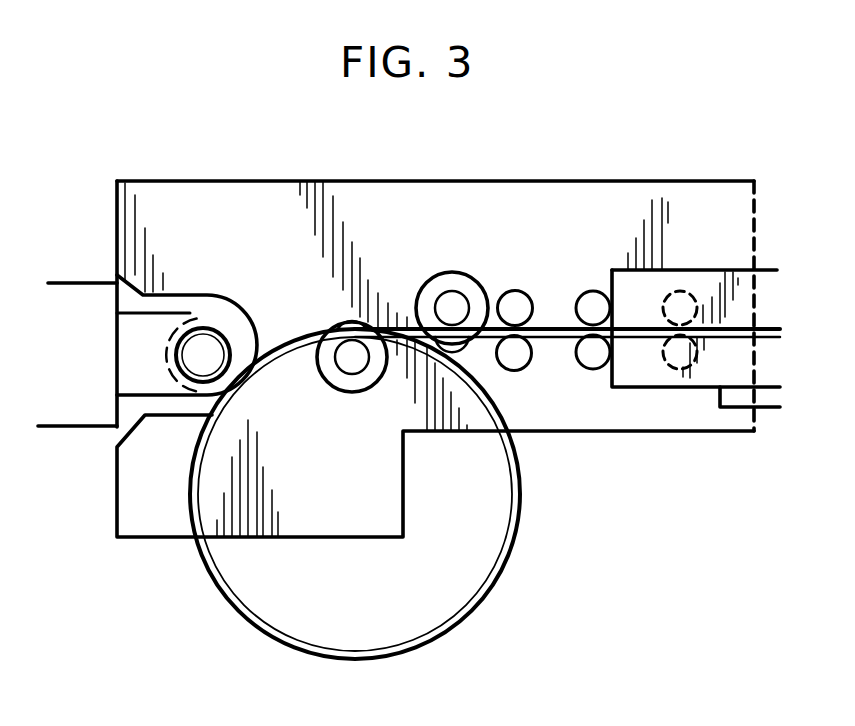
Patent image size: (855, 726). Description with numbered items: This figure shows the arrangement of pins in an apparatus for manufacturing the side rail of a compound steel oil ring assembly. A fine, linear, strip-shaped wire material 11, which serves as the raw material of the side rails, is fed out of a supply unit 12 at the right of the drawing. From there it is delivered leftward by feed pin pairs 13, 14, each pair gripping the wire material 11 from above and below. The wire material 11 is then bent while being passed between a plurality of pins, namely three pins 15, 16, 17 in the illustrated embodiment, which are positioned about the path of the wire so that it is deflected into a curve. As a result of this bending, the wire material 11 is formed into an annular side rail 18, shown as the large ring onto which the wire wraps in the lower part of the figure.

The wire material 11 is at (637, 340).
The supply unit 12 is at (720, 280).
The feed pin pair 13 is at (593, 302).
The feed pin pair 14 is at (515, 303).
The pin 15 is at (453, 305).
The pin 16 is at (352, 360).
The pin 17 is at (203, 348).
The side rail 18 is at (487, 593).